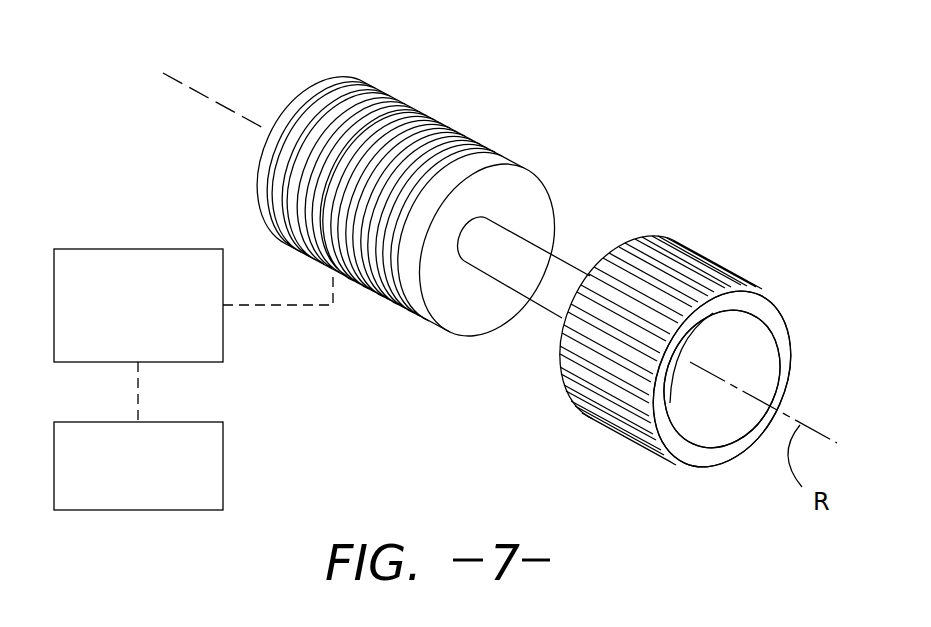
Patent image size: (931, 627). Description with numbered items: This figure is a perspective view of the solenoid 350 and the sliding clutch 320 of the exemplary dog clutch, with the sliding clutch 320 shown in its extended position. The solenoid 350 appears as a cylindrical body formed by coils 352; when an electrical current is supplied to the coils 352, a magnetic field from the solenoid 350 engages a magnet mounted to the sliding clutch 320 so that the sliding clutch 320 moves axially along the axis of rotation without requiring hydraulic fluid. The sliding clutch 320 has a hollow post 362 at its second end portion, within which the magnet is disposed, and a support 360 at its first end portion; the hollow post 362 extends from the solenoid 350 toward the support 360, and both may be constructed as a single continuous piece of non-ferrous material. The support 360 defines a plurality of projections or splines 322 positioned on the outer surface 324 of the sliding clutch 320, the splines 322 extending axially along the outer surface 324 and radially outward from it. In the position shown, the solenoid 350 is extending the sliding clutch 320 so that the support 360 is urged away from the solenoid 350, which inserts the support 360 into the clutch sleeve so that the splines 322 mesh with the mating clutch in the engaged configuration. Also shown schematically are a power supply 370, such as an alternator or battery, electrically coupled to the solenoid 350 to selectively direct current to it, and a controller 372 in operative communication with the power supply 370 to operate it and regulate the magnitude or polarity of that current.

The solenoid 350 is at (305, 108).
The coils 352 is at (415, 126).
The hollow post 362 is at (555, 268).
The sliding clutch 320 is at (792, 338).
The splines 322 is at (670, 268).
The outer surface 324 is at (723, 290).
The support 360 is at (764, 377).
The power supply 370 is at (160, 347).
The controller 372 is at (160, 494).